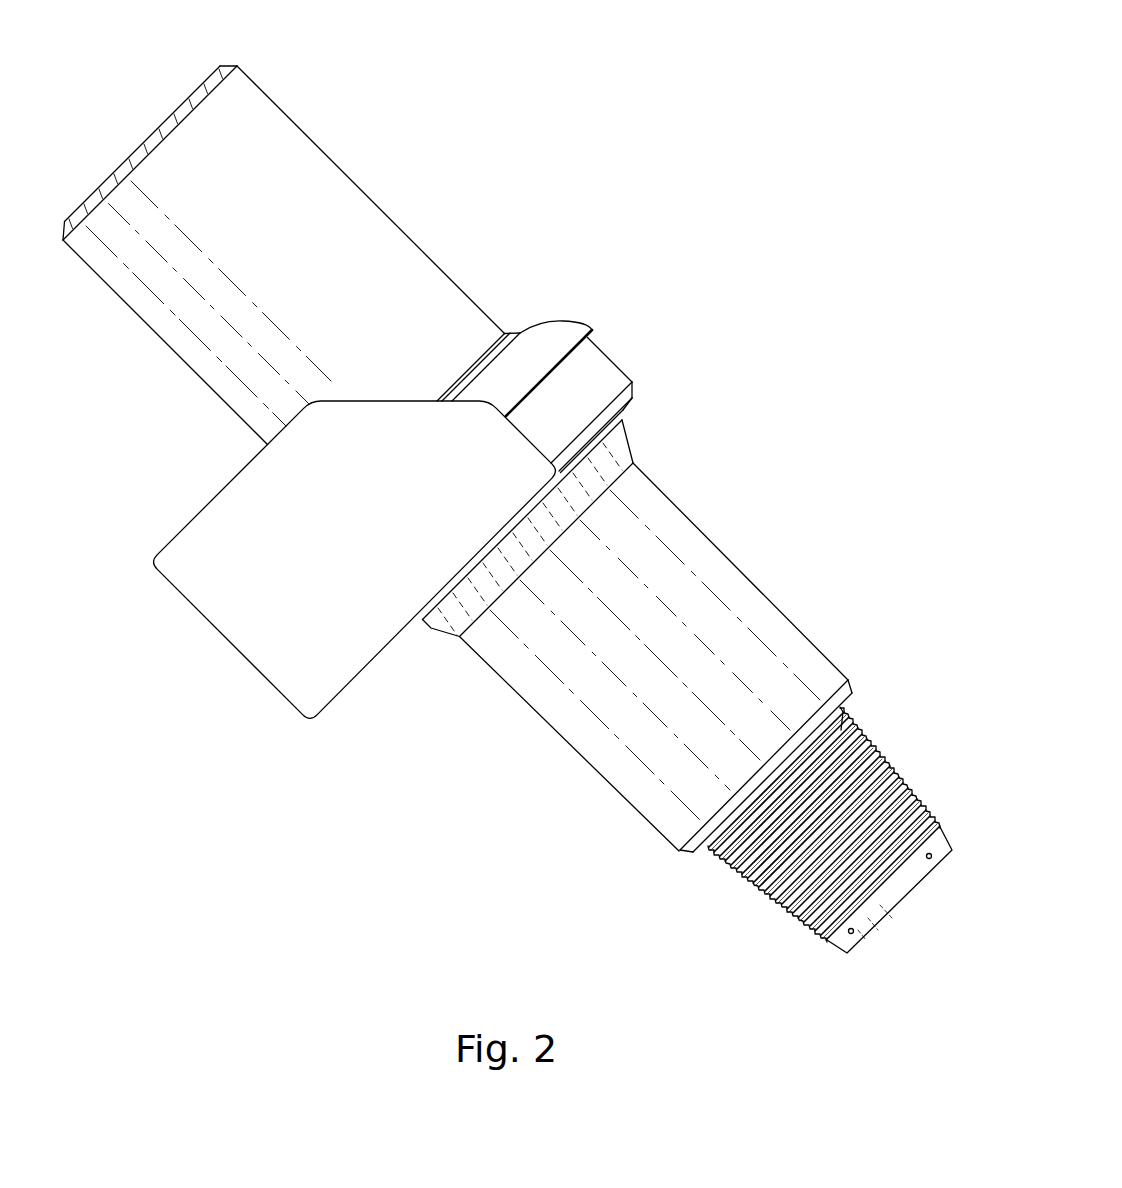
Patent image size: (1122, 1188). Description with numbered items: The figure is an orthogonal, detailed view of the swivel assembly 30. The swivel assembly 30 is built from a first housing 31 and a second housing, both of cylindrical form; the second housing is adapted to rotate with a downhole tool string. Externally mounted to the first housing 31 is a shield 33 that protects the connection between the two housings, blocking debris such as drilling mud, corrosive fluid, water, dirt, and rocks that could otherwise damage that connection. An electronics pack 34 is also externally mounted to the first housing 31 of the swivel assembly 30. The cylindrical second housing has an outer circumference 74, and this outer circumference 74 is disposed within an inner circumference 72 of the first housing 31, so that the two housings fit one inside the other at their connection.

The swivel assembly 30 is at (604, 86).
The first housing 31 is at (607, 380).
The shield 33 is at (553, 335).
The electronics pack 34 is at (267, 662).
The inner circumference 72 is at (618, 410).
The outer circumference 74 is at (432, 260).